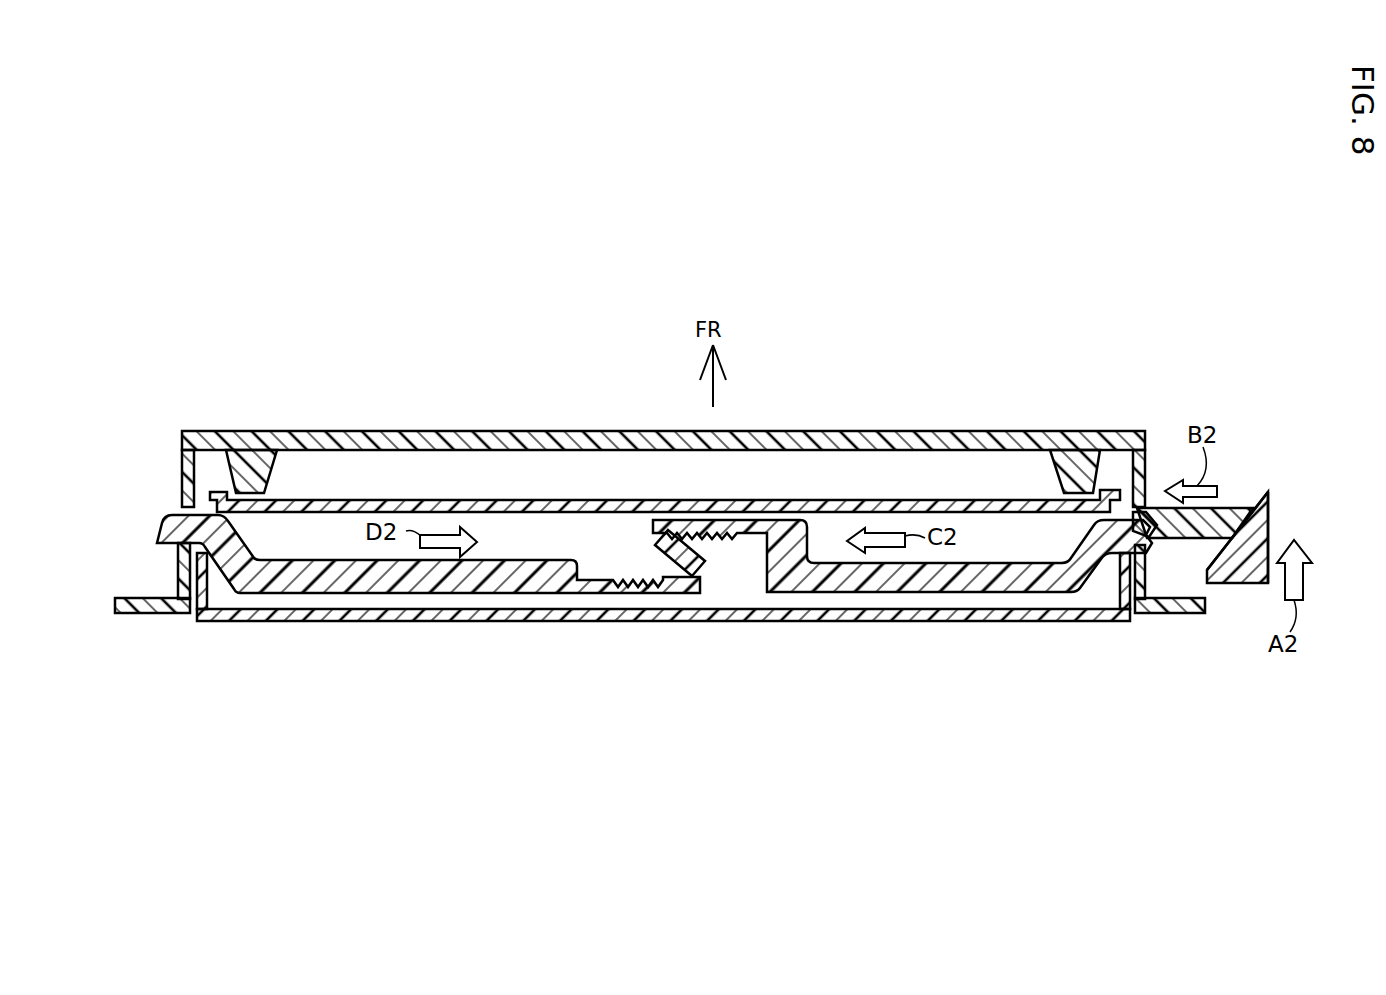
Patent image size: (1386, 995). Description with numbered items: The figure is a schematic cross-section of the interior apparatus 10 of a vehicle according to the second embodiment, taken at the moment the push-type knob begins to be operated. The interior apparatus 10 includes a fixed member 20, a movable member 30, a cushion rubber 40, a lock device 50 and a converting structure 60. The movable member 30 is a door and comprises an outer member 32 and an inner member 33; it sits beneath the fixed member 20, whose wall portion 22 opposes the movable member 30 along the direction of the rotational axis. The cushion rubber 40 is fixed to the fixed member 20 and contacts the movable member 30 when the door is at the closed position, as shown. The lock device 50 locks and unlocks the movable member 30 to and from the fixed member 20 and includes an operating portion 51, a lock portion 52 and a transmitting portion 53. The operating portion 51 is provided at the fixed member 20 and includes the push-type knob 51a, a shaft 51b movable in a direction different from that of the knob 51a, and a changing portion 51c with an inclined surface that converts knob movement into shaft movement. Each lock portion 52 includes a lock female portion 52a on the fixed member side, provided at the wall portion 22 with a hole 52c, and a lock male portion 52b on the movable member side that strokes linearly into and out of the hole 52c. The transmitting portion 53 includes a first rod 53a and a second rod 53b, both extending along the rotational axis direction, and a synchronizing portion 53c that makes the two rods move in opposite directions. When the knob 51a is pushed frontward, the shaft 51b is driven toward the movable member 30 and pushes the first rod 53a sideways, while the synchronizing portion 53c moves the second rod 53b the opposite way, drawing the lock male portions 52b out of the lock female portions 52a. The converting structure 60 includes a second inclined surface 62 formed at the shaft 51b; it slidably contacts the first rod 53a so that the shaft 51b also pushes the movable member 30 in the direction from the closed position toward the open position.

The interior apparatus 10 is at (460, 429).
The fixed member 20 is at (813, 441).
The wall portion 22 is at (183, 484).
The cushion rubber 40 is at (265, 470).
The inner member 33 is at (500, 503).
The second inclined surface 62 is at (1147, 521).
The converting structure 60 is at (1172, 460).
The transmitting portion 53 is at (485, 583).
The first rod 53a is at (820, 583).
The second rod 53b is at (413, 583).
The synchronizing portion 53c is at (670, 573).
The movable member 30 is at (958, 613).
The outer member 32 is at (880, 615).
The lock portion 52 is at (267, 668).
The lock female portion 52a is at (178, 546).
The lock male portion 52b is at (170, 528).
The hole 52c is at (656, 609).
The lock device 50 is at (1243, 575).
The operating portion 51 is at (1318, 385).
The push-type knob 51a is at (1255, 500).
The shaft 51b is at (1230, 510).
The changing portion 51c is at (1252, 503).